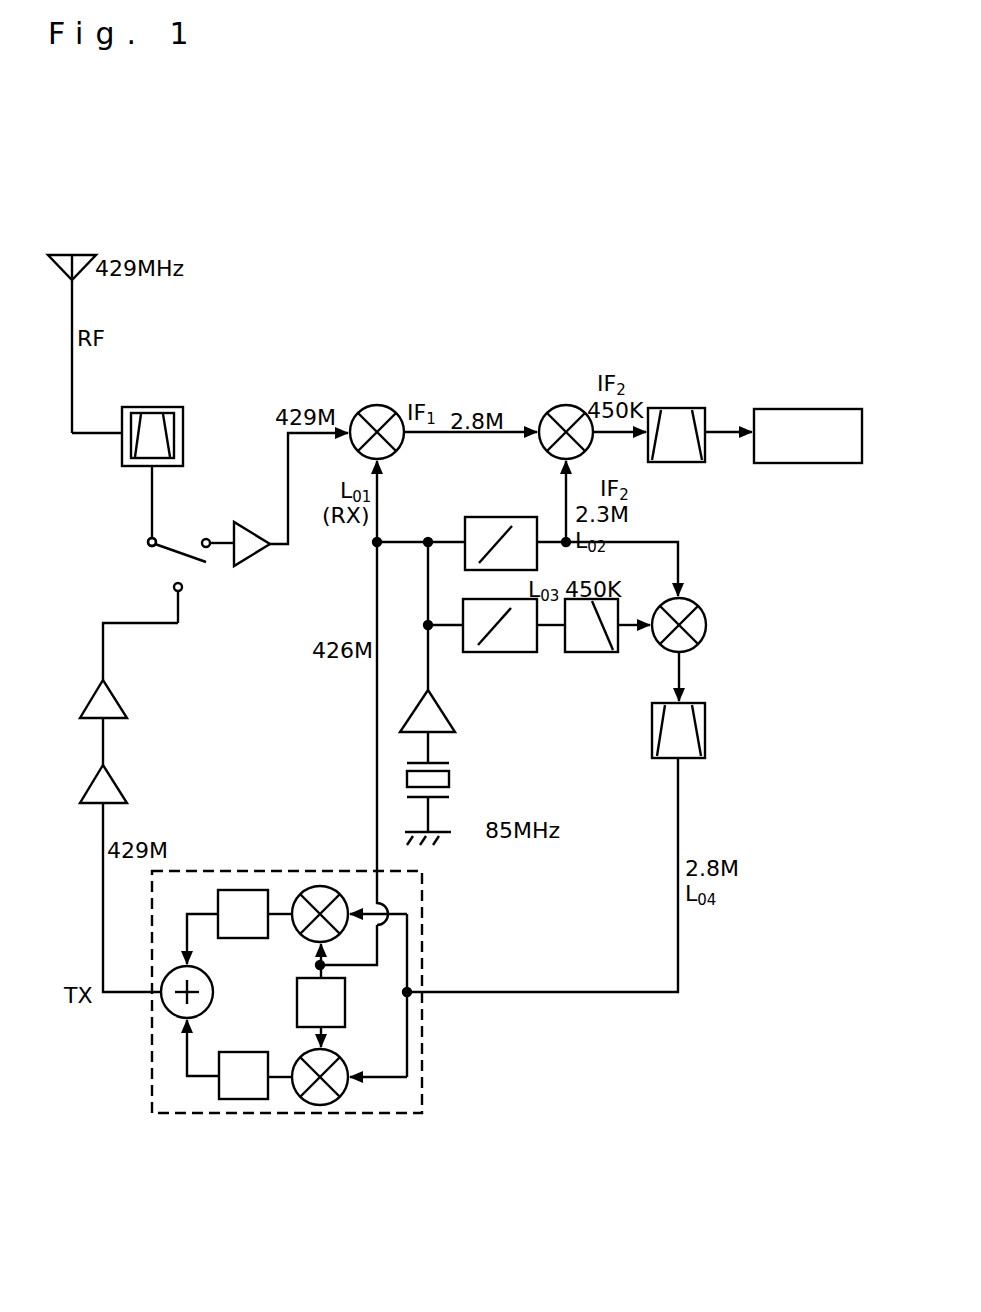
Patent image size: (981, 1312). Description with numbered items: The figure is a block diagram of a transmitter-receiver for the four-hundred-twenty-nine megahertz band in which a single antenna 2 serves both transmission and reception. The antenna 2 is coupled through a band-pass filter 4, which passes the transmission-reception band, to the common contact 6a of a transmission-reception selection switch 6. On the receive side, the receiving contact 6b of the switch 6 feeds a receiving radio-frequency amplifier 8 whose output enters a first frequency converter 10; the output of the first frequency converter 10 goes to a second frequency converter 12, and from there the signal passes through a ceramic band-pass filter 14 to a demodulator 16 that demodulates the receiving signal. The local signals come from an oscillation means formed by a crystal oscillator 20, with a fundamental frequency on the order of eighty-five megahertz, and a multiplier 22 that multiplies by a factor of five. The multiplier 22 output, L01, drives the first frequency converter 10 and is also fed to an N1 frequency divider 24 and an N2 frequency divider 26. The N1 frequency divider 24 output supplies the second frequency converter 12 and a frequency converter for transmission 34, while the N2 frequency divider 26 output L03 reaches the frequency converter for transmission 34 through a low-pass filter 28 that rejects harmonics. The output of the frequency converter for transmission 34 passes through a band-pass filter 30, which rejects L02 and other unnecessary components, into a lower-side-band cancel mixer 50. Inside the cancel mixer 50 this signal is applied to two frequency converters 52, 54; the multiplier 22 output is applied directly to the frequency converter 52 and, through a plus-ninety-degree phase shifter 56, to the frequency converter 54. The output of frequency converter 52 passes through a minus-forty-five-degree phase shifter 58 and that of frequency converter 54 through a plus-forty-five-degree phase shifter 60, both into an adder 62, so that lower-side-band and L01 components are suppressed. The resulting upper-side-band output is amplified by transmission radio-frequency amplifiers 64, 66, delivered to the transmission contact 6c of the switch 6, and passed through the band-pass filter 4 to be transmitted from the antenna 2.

The antenna 2 is at (72, 255).
The band-pass filter 4 is at (183, 433).
The transmission-reception selection switch 6 is at (148, 543).
The common contact 6a is at (149, 548).
The receiving contact 6b is at (206, 539).
The transmission contact 6c is at (182, 587).
The receiving radio-frequency amplifier 8 is at (252, 556).
The first frequency converter 10 is at (377, 405).
The second frequency converter 12 is at (566, 405).
The band-pass filter 14 is at (676, 408).
The demodulator 16 is at (808, 409).
The crystal oscillator 20 is at (450, 790).
The multiplier 22 is at (452, 718).
The N1 frequency divider 24 is at (503, 517).
The N2 frequency divider 26 is at (493, 652).
The low-pass filter 28 is at (598, 652).
The band-pass filter 30 is at (705, 730).
The frequency converter for transmission 34 is at (706, 625).
The lower-side-band cancel mixer 50 is at (422, 1046).
The frequency converter 52 is at (320, 886).
The frequency converter 54 is at (320, 1105).
The +90 degree phase shifter 56 is at (345, 1012).
The −45 degree phase shifter 58 is at (243, 890).
The +45 degree phase shifter 60 is at (240, 1099).
The adder 62 is at (213, 988).
The transmission radio-frequency amplifier 64 is at (112, 788).
The transmission radio-frequency amplifier 66 is at (112, 703).